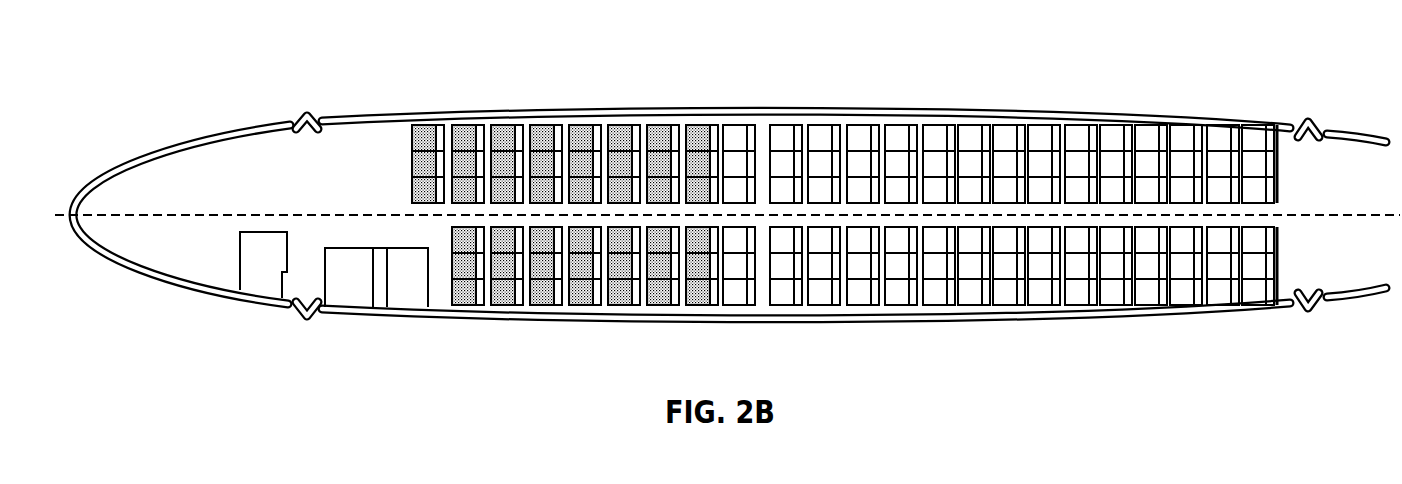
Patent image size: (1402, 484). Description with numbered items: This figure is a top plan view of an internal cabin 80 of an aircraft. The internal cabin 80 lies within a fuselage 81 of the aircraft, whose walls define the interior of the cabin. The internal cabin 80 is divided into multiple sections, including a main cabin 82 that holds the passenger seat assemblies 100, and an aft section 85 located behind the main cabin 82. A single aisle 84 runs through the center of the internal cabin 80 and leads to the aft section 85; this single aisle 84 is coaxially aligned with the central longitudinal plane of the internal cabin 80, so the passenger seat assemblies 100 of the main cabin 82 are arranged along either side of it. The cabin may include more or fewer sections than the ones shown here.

The internal cabin 80 is at (727, 169).
The fuselage 81 is at (528, 117).
The main cabin 82 is at (467, 143).
The single aisle 84 is at (862, 208).
The aft section 85 is at (1293, 146).
The passenger seat assemblies 100 is at (738, 143).